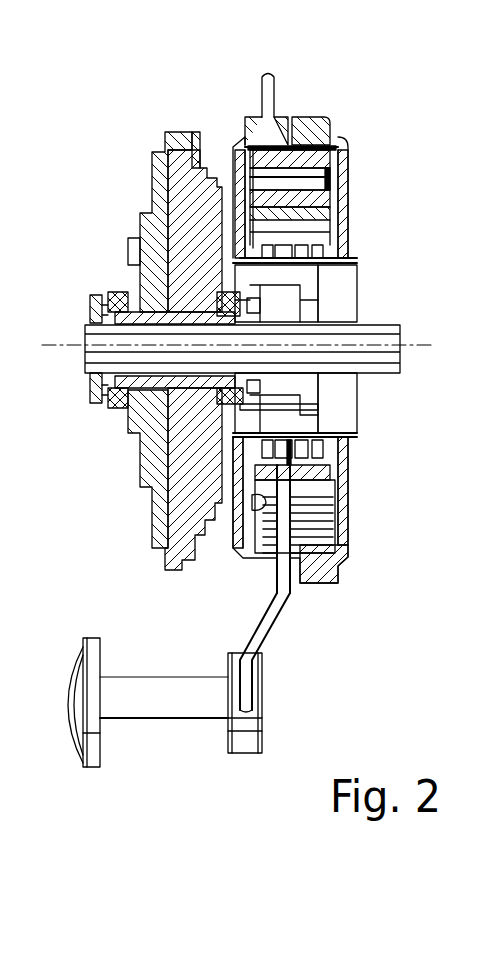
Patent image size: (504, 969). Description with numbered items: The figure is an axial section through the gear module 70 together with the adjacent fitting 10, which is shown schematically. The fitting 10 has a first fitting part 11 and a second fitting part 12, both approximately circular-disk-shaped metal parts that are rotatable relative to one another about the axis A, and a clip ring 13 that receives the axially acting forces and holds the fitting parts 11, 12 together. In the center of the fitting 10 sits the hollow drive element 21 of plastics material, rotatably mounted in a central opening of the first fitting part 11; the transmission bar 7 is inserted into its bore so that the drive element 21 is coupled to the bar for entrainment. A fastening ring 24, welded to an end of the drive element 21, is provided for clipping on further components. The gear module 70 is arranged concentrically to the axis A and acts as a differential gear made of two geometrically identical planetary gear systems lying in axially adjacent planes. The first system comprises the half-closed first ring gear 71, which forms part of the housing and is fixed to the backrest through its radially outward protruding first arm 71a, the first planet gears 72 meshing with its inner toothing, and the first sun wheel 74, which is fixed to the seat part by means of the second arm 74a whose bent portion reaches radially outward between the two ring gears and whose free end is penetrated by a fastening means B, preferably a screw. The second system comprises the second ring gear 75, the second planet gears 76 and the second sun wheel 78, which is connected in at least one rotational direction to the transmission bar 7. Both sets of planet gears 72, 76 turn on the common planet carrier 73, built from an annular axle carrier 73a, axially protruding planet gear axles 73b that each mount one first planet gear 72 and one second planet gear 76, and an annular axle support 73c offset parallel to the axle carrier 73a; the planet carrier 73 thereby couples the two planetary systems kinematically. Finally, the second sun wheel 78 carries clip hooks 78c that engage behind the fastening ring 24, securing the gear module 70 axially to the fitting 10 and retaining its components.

The transmission bar 7 is at (95, 340).
The axis A is at (60, 352).
The fitting 10 is at (160, 308).
The first fitting part 11 is at (187, 227).
The second fitting part 12 is at (165, 173).
The clip ring 13 is at (194, 148).
The drive element 21 is at (132, 313).
The fastening ring 24 is at (113, 394).
The gear module 70 is at (318, 380).
The first ring gear 71 is at (252, 130).
The first arm 71a is at (270, 80).
The first planet gear 72 is at (273, 205).
The planet carrier 73 is at (252, 160).
The axle carrier 73a is at (262, 498).
The planet gear axles 73b is at (317, 195).
The axle support 73c is at (327, 490).
The first sun wheel 74 is at (273, 475).
The second arm 74a is at (278, 618).
The second ring gear 75 is at (315, 562).
The second planet gear 76 is at (305, 215).
The second sun wheel 78 is at (305, 477).
The clip hooks 78c is at (275, 407).
The fastening means B is at (165, 715).